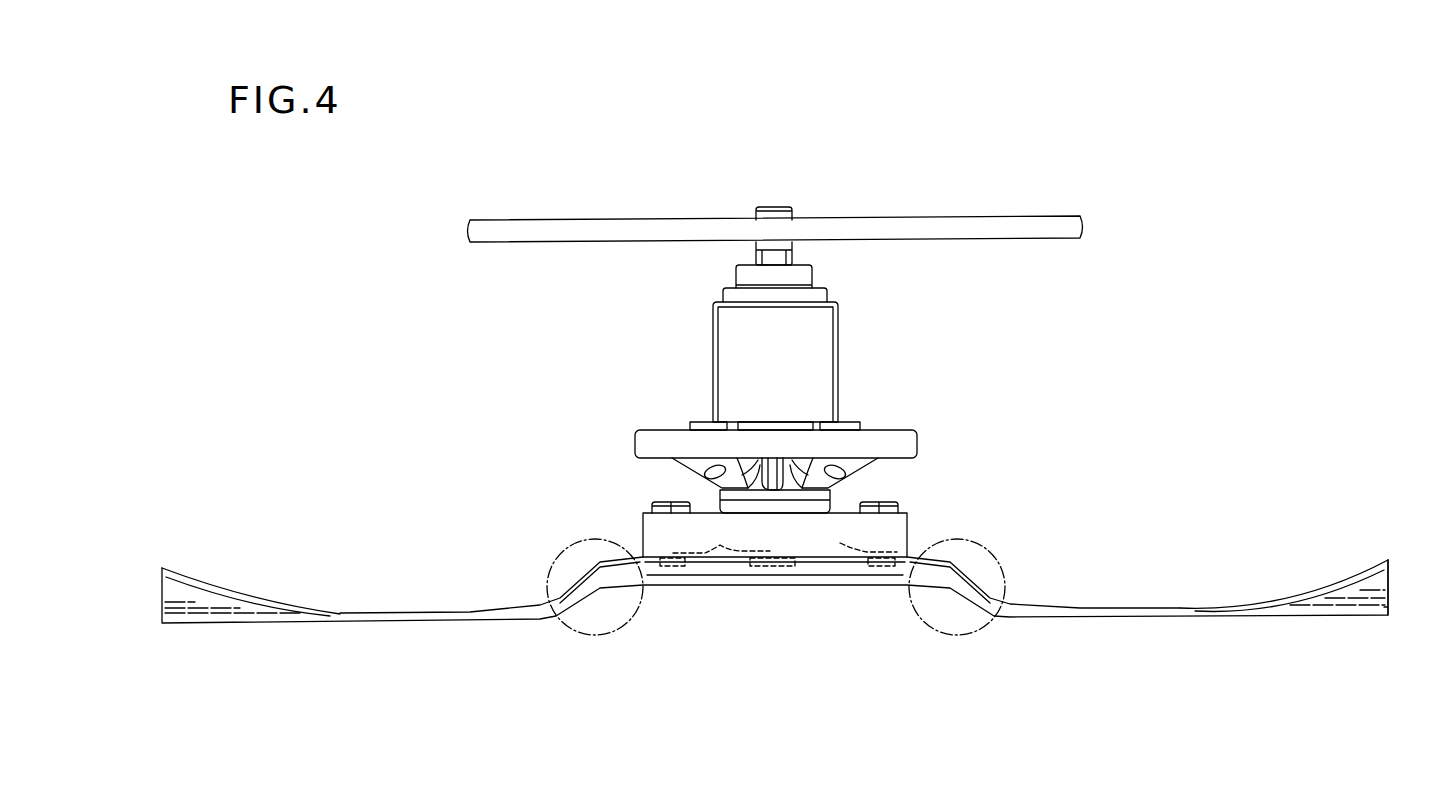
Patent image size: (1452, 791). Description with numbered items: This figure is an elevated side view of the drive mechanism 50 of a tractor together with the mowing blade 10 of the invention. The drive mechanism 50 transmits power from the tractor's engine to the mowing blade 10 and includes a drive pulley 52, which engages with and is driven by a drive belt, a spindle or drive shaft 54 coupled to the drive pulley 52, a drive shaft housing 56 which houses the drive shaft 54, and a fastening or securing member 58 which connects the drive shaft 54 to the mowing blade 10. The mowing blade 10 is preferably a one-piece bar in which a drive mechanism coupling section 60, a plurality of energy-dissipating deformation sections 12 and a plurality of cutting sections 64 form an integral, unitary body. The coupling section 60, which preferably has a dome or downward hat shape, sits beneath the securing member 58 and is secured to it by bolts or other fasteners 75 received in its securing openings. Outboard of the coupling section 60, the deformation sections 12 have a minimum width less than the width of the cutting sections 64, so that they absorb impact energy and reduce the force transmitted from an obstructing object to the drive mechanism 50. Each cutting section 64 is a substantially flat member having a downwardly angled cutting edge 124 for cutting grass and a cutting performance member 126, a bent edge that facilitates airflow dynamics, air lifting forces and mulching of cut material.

The mowing blade 10 is at (197, 510).
The energy-dissipating deformation section 12 is at (640, 619).
The drive mechanism 50 is at (1162, 325).
The drive pulley 52 is at (1013, 216).
The drive shaft 54 is at (773, 198).
The drive shaft housing 56 is at (842, 362).
The securing member 58 is at (910, 523).
The drive mechanism coupling section 60 is at (752, 588).
The cutting section 64 is at (233, 625).
The fasteners 75 is at (836, 548).
The cutting edge 124 is at (1389, 613).
The cutting performance member 126 is at (185, 575).